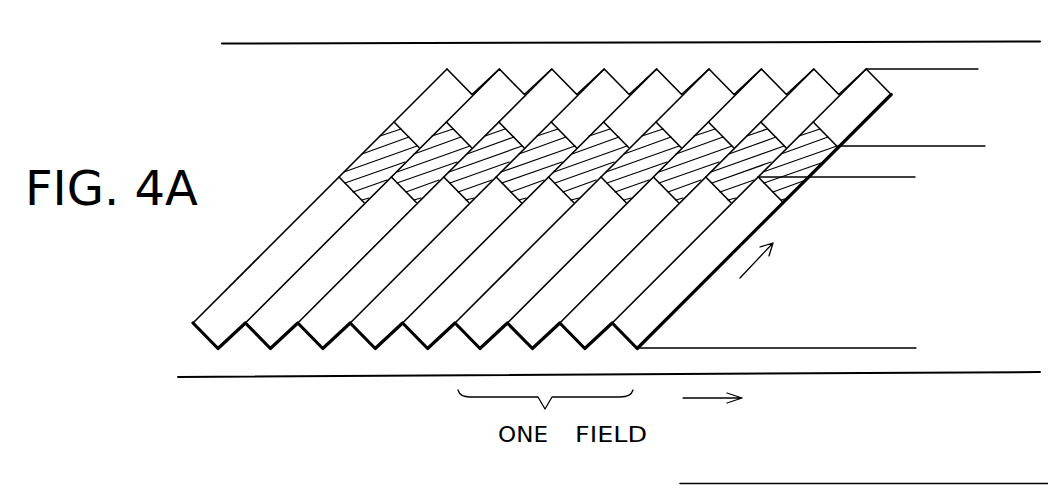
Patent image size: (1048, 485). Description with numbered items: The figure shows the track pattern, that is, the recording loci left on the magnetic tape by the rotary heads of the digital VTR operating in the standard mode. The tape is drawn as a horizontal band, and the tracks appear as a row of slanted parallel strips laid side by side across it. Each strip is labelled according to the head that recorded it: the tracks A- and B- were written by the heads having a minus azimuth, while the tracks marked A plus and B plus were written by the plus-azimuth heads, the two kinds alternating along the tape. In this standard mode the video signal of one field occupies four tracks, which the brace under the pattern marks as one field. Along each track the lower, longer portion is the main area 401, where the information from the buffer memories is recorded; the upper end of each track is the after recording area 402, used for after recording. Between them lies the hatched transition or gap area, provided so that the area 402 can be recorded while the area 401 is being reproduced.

The main area 401 is at (898, 177).
The after recording area 402 is at (966, 69).
The track recorded by head HA- A- is at (616, 184).
The track recorded by head HB- B- is at (511, 184).